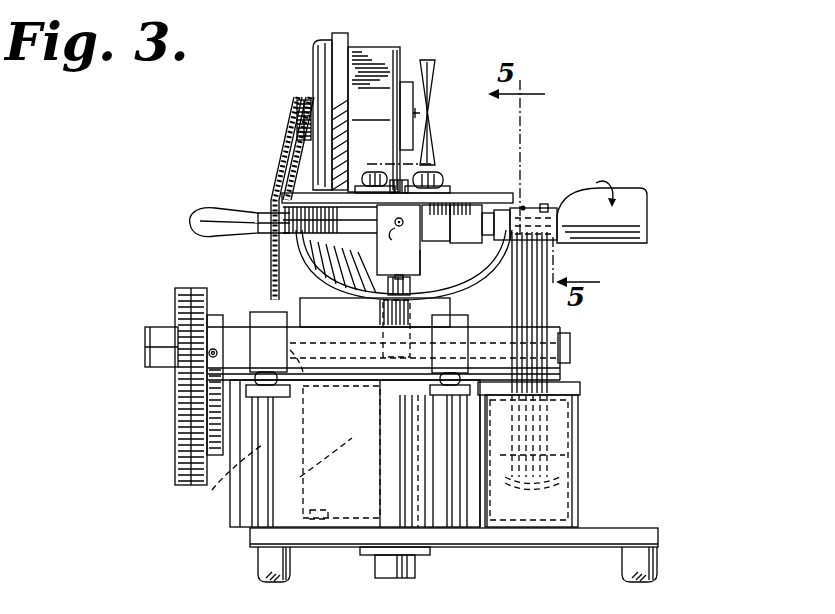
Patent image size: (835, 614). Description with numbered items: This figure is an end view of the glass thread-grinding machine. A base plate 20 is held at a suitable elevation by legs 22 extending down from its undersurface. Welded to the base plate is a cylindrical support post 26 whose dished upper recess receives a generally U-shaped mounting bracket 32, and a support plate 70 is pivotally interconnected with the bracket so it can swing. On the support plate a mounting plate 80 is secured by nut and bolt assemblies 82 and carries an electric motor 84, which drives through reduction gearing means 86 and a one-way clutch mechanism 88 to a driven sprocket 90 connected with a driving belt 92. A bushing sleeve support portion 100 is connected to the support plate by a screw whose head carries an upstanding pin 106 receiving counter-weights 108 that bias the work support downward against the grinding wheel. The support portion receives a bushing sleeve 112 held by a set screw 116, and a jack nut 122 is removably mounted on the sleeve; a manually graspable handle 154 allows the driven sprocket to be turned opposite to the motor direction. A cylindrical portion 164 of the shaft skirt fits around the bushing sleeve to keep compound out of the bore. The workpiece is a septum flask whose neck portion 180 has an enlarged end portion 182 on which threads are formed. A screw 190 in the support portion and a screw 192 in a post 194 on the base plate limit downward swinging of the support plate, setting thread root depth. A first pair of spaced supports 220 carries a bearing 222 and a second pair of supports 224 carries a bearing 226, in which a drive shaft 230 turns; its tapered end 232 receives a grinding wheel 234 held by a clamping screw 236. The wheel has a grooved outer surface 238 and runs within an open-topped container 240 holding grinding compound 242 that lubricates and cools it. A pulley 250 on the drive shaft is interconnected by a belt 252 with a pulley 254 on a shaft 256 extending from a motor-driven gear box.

The base plate 20 is at (658, 537).
The legs 22 is at (288, 563).
The support post 26 is at (362, 492).
The mounting bracket 32 is at (298, 290).
The support plate 70 is at (472, 198).
The mounting plate 80 is at (448, 185).
The nut and bolt assemblies 82 is at (444, 168).
The electric motor 84 is at (406, 46).
The reduction gearing means 86 is at (344, 42).
The one-way clutch mechanism 88 is at (322, 40).
The driven sprocket 90 is at (299, 111).
The driving belt 92 is at (283, 122).
The bushing sleeve support portion 100 is at (421, 260).
The pin 106 is at (376, 87).
The counter-weights 108 is at (375, 138).
The bushing sleeve 112 is at (444, 223).
The set screw 116 is at (401, 240).
The jack nut 122 is at (343, 232).
The handle 154 is at (203, 210).
The cylindrical portion 164 is at (480, 224).
The neck portion 180 is at (545, 206).
The enlarged end portion 182 is at (524, 206).
The screw 190 is at (412, 284).
The screw 192 is at (380, 310).
The post 194 is at (383, 431).
The first pair of spaced supports 220 is at (262, 500).
The bearing 222 is at (288, 331).
The second pair of supports 224 is at (455, 497).
The bearing 226 is at (452, 350).
The drive shaft 230 is at (157, 366).
The tapered end 232 is at (530, 325).
The grinding wheel 234 is at (543, 270).
The clamping screw 236 is at (572, 345).
The grooved outer surface 238 is at (545, 483).
The open-topped container 240 is at (577, 435).
The grinding compound 242 is at (555, 460).
The pulley 250 is at (178, 301).
The belt 252 is at (188, 396).
The pulley 254 is at (175, 459).
The shaft 256 is at (228, 442).